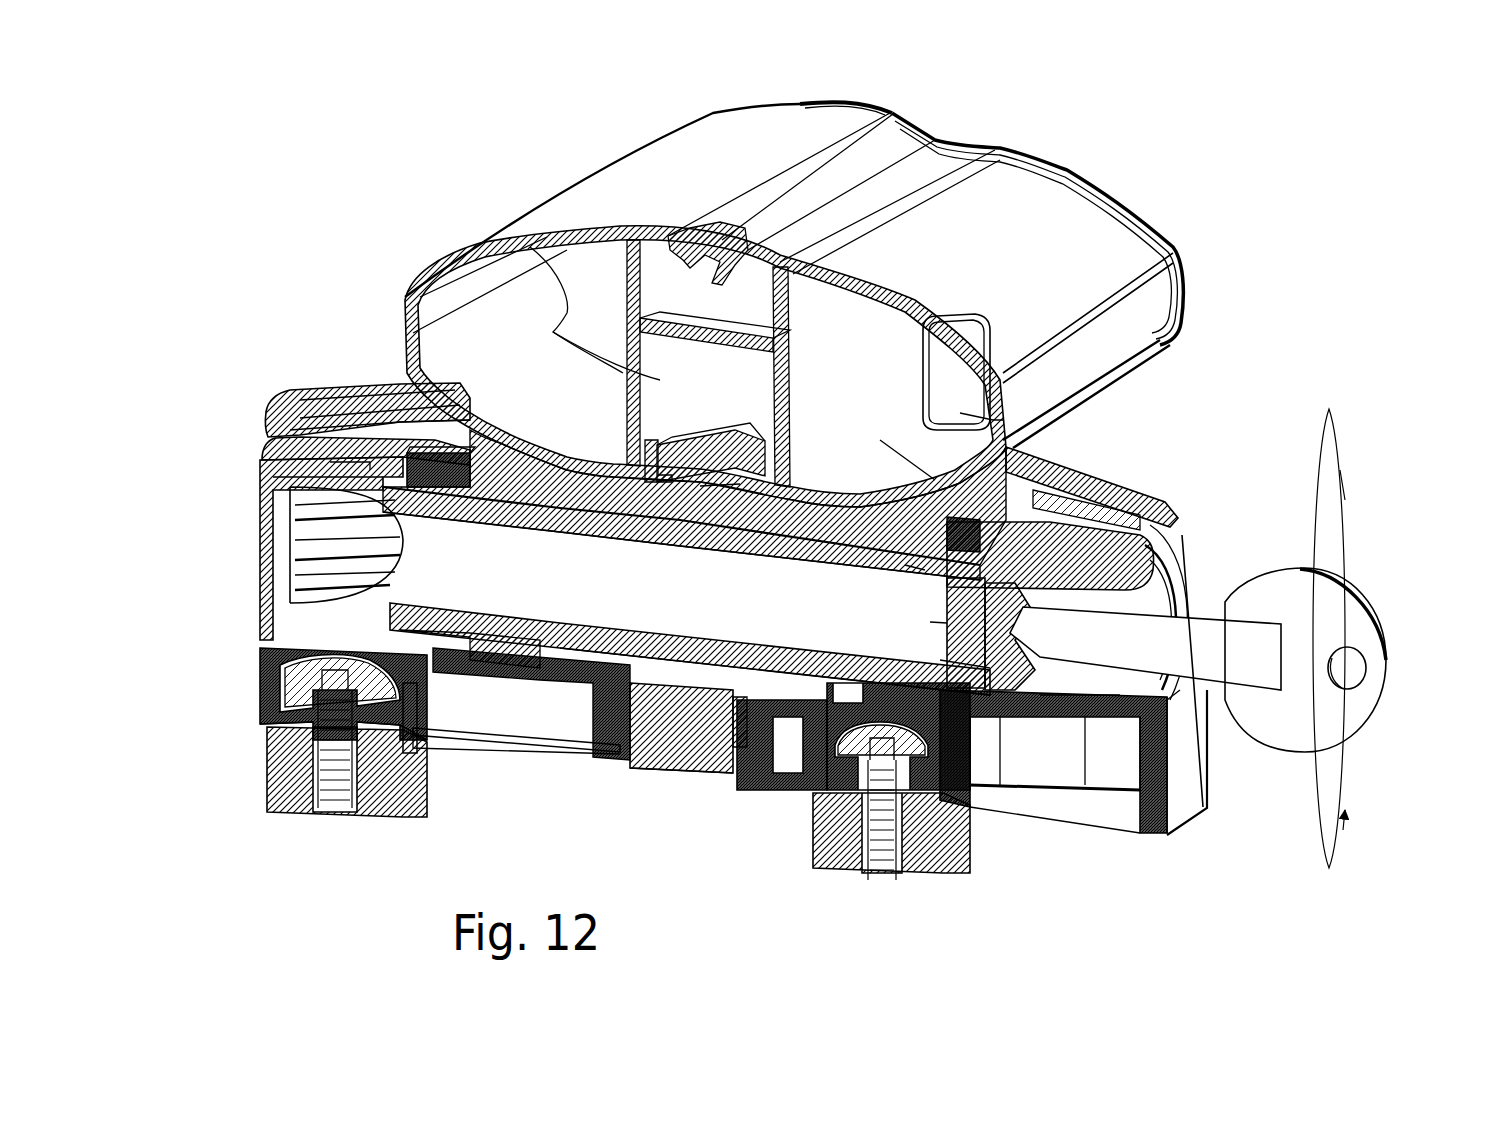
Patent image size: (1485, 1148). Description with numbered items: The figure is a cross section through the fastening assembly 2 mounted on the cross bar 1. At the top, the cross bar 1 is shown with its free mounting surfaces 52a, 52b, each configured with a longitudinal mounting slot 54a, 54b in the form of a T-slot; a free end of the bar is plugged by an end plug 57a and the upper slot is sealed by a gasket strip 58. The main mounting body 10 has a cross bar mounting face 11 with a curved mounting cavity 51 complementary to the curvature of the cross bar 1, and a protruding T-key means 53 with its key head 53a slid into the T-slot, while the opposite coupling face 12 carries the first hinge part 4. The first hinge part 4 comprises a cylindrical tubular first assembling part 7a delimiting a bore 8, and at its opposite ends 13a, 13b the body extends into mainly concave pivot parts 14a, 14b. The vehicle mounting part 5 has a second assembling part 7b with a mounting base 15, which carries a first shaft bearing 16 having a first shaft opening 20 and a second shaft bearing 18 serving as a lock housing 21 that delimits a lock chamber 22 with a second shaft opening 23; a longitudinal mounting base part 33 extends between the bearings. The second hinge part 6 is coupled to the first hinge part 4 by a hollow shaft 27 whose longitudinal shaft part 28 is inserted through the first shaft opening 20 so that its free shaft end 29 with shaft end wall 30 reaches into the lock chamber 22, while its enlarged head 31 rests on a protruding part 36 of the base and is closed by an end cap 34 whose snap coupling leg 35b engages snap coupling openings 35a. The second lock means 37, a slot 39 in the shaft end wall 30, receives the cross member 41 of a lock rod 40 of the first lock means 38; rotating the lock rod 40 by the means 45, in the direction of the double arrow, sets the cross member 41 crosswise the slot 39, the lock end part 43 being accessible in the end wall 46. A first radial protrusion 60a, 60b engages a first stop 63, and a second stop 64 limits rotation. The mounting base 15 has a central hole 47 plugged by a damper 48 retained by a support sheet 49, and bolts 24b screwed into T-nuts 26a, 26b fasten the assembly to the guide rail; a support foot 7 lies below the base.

The cross bar 1 is at (794, 304).
The fastening assembly 2 is at (212, 435).
The first hinge part 4 is at (603, 533).
The vehicle mounting part 5 is at (1180, 817).
The second hinge part 6 is at (1073, 550).
The support foot 7 is at (257, 718).
The first assembling part 7a is at (767, 553).
The second assembling part 7b is at (757, 780).
The bore 8 is at (670, 583).
The main mounting body 10 is at (345, 400).
The cross bar mounting face 11 is at (392, 425).
The coupling face 12 is at (310, 400).
The end of the tubular first assembling part 13a is at (435, 488).
The end of the tubular first assembling part 13b is at (857, 560).
The pivot part 14a is at (356, 395).
The pivot part 14b is at (1087, 480).
The mounting base 15 is at (950, 807).
The first shaft bearing 16 is at (420, 480).
The second shaft bearing 18 is at (1175, 570).
The first shaft opening 20 is at (977, 720).
The lock housing 21 is at (1137, 740).
The lock chamber 22 is at (1127, 620).
The second shaft opening 23 is at (1165, 605).
The bolt 24b is at (332, 802).
The T-nut 26a is at (278, 793).
The T-nut 26b is at (933, 883).
The shaft 27 is at (683, 650).
The longitudinal shaft part 28 is at (577, 660).
The free shaft end 29 is at (910, 567).
The shaft end wall 30 is at (957, 580).
The enlarged head 31 is at (262, 445).
The longitudinal mounting base part 33 is at (493, 637).
The end cap 34 is at (266, 490).
The snap coupling opening 35a is at (310, 470).
The snap coupling leg 35b is at (350, 480).
The protruding part 36 is at (262, 684).
The second lock means 37 is at (1055, 803).
The first lock means 38 is at (1370, 592).
The slot 39 is at (950, 660).
The lock rod 40 is at (1017, 643).
The cross member 41 is at (943, 627).
The lock end part 43 is at (1173, 713).
The means to rotate the lock rod 45 is at (1367, 688).
The end wall 46 is at (1185, 753).
The central hole 47 is at (633, 713).
The damper 48 is at (677, 760).
The support sheet 49 is at (507, 748).
The curved mounting cavity 51 is at (572, 523).
The free mounting surface 52a is at (923, 473).
The free mounting surface 52b is at (937, 312).
The T-key means 53 is at (650, 440).
The retaining block 53a is at (780, 460).
The longitudinal mounting slot 54a is at (713, 483).
The longitudinal mounting slot 54b is at (770, 241).
The end plug 57a is at (1075, 166).
The gasket strip 58 is at (862, 117).
The first radial protrusion 60a is at (1040, 697).
The first radial protrusion 60b is at (1047, 513).
The first stop 63 is at (1033, 700).
The second stop 64 is at (1127, 700).